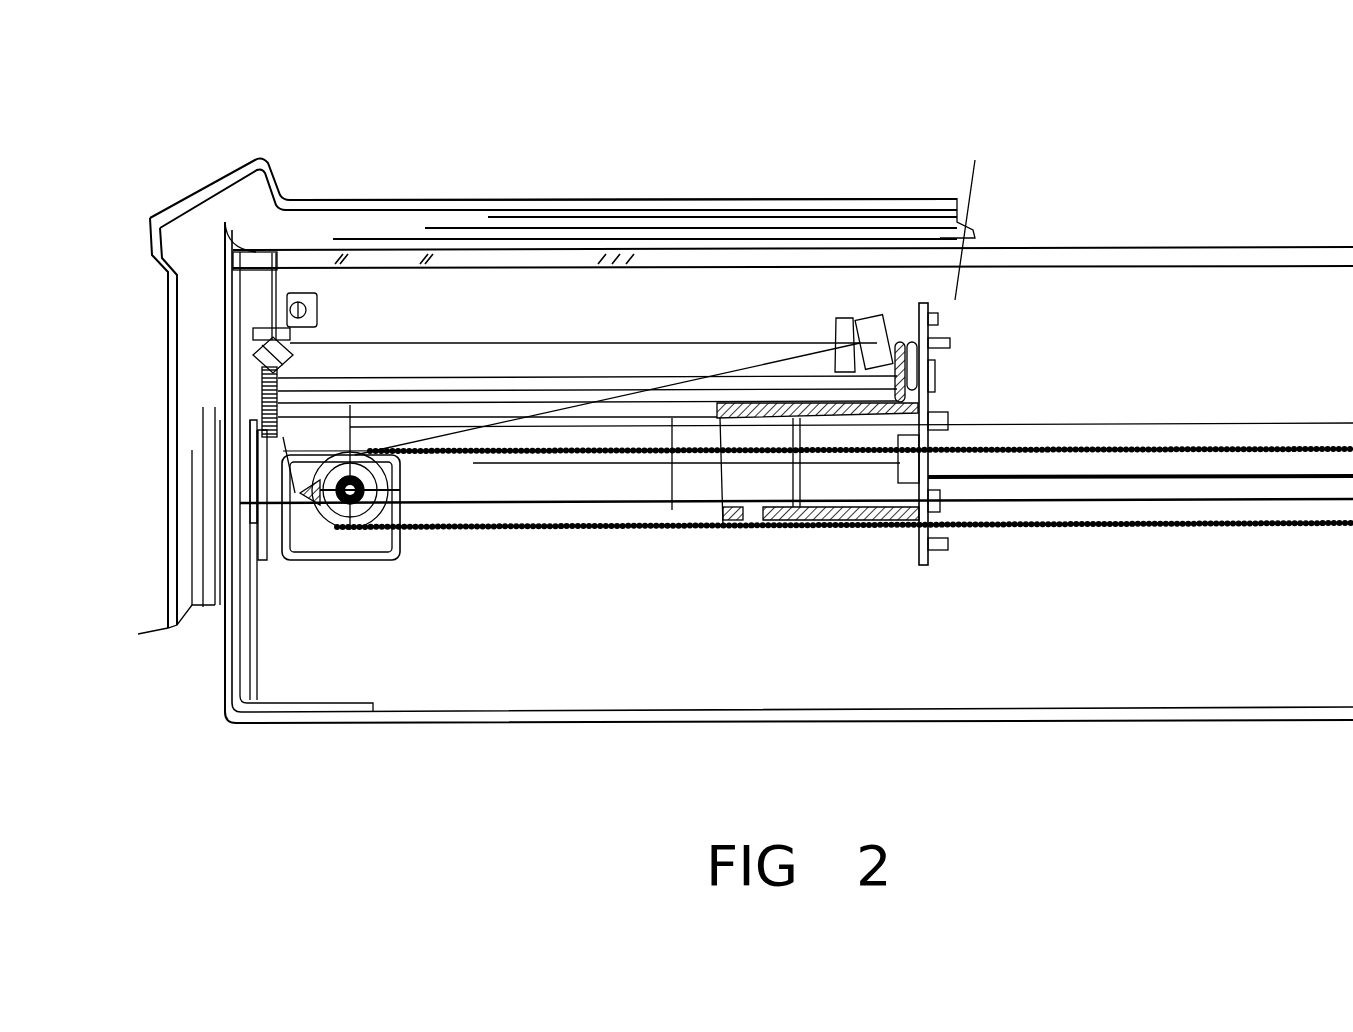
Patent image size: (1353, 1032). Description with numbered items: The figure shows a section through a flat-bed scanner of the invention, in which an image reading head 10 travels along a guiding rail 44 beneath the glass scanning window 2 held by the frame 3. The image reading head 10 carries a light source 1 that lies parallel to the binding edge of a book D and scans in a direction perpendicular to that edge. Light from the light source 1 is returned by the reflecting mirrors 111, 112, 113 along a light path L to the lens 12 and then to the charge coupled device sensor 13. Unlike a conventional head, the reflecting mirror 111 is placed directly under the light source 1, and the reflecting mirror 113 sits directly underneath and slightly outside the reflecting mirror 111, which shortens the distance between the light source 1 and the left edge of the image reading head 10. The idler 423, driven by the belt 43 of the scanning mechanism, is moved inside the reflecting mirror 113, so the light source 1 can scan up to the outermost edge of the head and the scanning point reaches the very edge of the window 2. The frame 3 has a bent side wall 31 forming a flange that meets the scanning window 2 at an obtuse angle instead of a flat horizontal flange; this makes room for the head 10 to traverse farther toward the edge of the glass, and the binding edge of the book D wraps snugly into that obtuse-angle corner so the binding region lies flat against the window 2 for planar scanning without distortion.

The light source 1 is at (300, 297).
The glass scanning window 2 is at (698, 258).
The frame 3 is at (240, 600).
The image reading head 10 is at (787, 527).
The lens 12 is at (692, 487).
The charge coupled device (CCD) sensor 13 is at (905, 483).
The housing side wall 31 is at (237, 402).
The belt 43 is at (1040, 440).
The guiding rail 44 is at (1162, 498).
The reflecting mirror 111 is at (255, 330).
The reflecting mirror 112 is at (878, 328).
The reflecting mirror 113 is at (277, 512).
The idler 423 is at (360, 527).
The book D is at (470, 205).
The light path L is at (389, 340).